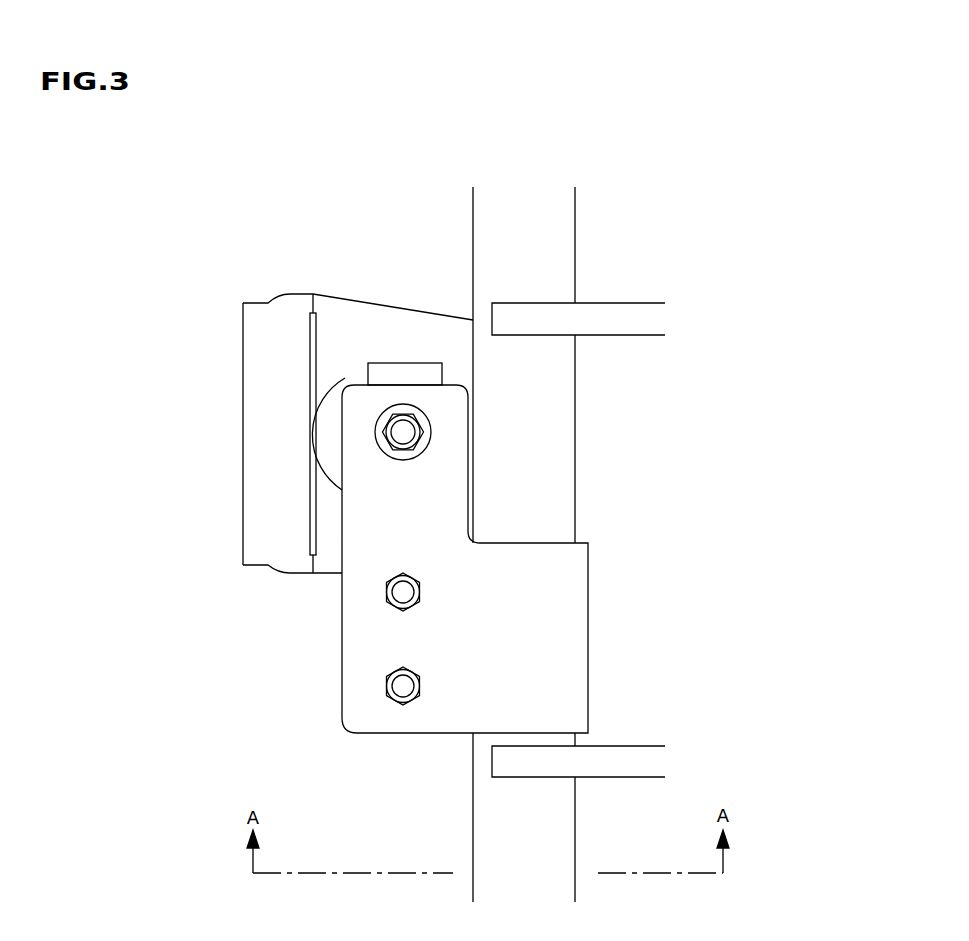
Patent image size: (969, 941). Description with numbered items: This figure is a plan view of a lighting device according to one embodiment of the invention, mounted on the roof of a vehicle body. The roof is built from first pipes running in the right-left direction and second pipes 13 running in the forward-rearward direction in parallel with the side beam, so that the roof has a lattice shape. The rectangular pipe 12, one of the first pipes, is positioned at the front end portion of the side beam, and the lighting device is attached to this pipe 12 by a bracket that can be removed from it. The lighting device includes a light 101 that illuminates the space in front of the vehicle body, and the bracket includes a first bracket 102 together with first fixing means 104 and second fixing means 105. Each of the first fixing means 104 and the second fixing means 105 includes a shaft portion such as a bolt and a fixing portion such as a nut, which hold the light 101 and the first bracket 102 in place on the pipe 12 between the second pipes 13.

The rectangular pipe 12 is at (532, 227).
The second pipes 13 is at (623, 320).
The light 101 is at (265, 372).
The first bracket 102 is at (552, 642).
The first fixing means 104 is at (404, 432).
The second fixing means 105 is at (403, 686).